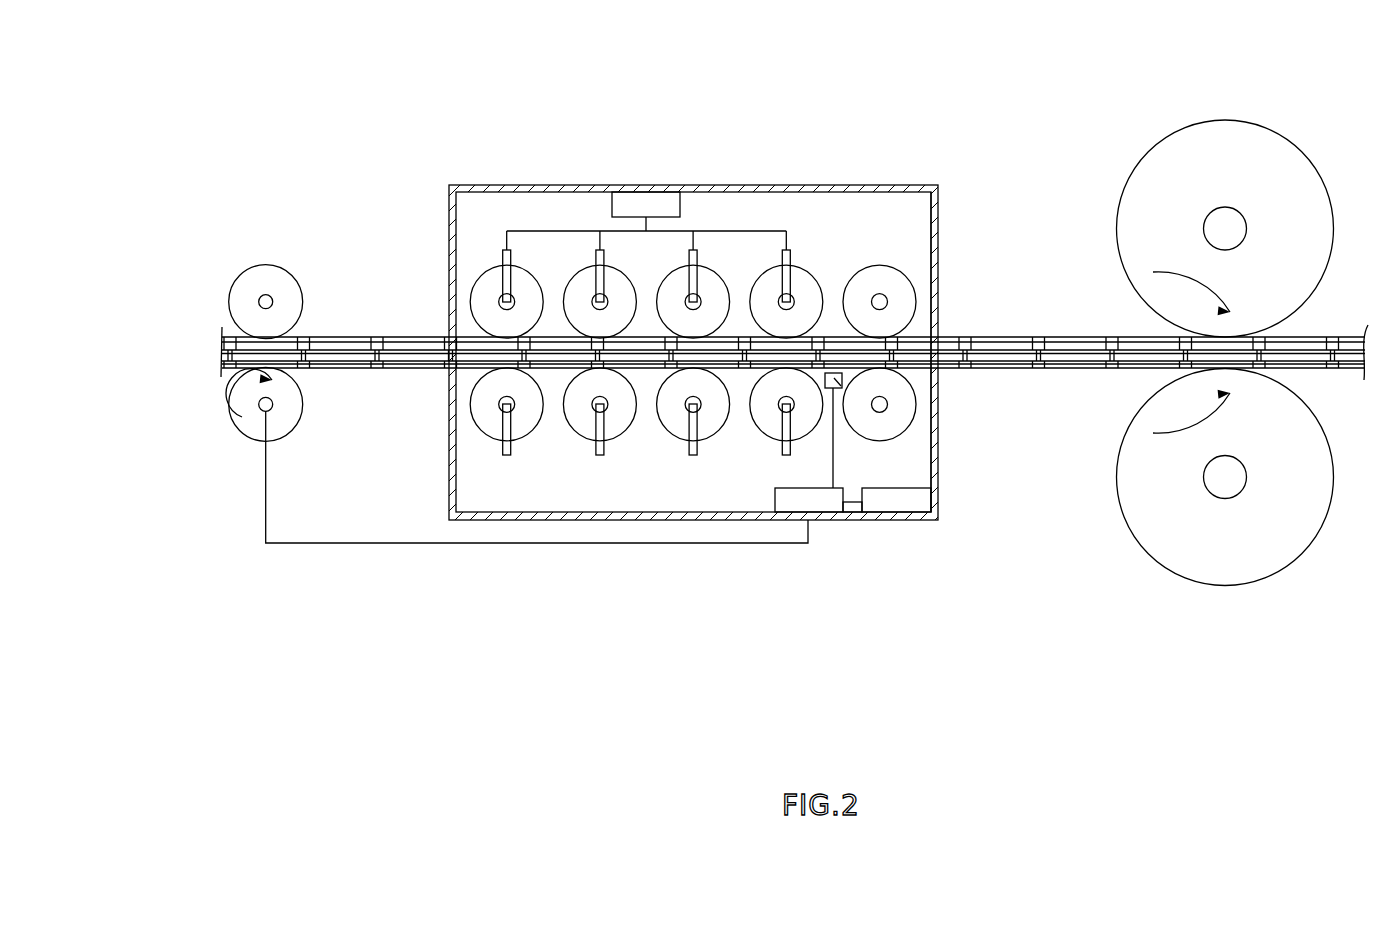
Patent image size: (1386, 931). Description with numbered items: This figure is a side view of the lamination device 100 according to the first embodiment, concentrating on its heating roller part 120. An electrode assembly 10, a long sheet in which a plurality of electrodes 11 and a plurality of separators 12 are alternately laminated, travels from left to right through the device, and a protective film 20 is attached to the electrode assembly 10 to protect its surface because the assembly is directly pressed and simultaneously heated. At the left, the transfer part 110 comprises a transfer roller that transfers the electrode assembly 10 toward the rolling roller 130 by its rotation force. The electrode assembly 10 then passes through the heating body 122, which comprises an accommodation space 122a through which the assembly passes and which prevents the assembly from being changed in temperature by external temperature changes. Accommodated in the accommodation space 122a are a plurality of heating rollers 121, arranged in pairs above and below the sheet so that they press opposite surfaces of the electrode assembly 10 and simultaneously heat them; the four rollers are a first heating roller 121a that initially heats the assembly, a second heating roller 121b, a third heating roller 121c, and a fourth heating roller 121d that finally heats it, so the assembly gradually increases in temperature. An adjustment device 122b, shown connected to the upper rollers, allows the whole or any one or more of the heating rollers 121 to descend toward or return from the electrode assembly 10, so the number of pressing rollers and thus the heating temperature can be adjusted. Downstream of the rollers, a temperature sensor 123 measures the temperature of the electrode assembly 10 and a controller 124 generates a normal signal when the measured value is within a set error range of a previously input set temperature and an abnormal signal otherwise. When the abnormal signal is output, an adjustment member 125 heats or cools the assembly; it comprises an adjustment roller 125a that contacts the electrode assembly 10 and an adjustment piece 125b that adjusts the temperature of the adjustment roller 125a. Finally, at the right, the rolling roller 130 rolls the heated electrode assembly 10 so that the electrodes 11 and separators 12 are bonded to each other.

The lamination device 100 is at (382, 122).
The electrode assembly 10 is at (162, 303).
The electrode 11 is at (222, 363).
The separator 12 is at (275, 352).
The protective film 20 is at (360, 337).
The transfer part 110 is at (270, 407).
The heating roller part 120 is at (967, 645).
The heating rollers 121 is at (765, 602).
The first heating roller 121a is at (505, 408).
The second heating roller 121b is at (598, 408).
The third heating roller 121c is at (692, 408).
The fourth heating roller 121d is at (785, 408).
The heating body 122 is at (452, 520).
The accommodation space 122a is at (909, 229).
The adjustment device 122b is at (788, 262).
The temperature sensor 123 is at (850, 393).
The controller 124 is at (830, 504).
The adjustment member 125 is at (1003, 570).
The adjustment roller 125a is at (884, 404).
The adjustment piece 125b is at (915, 503).
The rolling roller 130 is at (1226, 483).